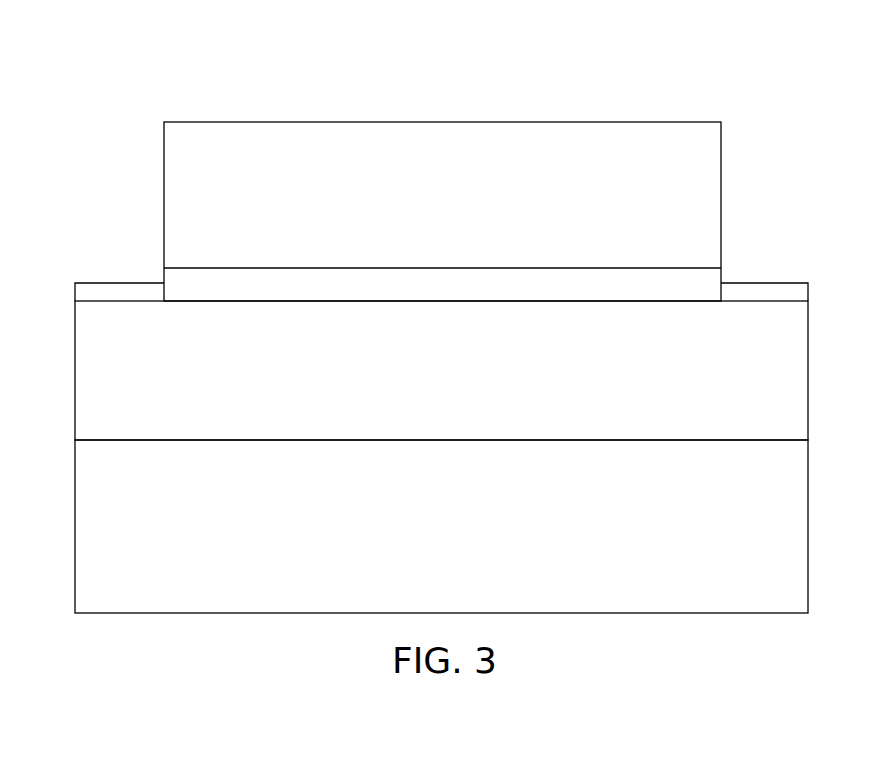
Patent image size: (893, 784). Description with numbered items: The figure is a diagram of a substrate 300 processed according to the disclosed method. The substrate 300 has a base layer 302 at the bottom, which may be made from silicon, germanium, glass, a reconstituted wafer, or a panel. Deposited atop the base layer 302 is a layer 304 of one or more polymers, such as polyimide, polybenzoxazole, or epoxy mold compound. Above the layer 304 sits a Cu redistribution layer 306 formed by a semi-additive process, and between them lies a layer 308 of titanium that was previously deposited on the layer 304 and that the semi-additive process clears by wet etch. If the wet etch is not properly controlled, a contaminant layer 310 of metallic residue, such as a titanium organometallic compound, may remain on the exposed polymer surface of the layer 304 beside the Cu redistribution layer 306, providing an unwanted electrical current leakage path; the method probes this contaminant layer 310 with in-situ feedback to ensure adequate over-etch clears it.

The substrate 300 is at (134, 47).
The base layer 302 is at (75, 467).
The layer 304 is at (75, 329).
The Cu redistribution layer 306 is at (164, 149).
The layer of titanium 308 is at (202, 285).
The contaminant layer 310 is at (762, 283).